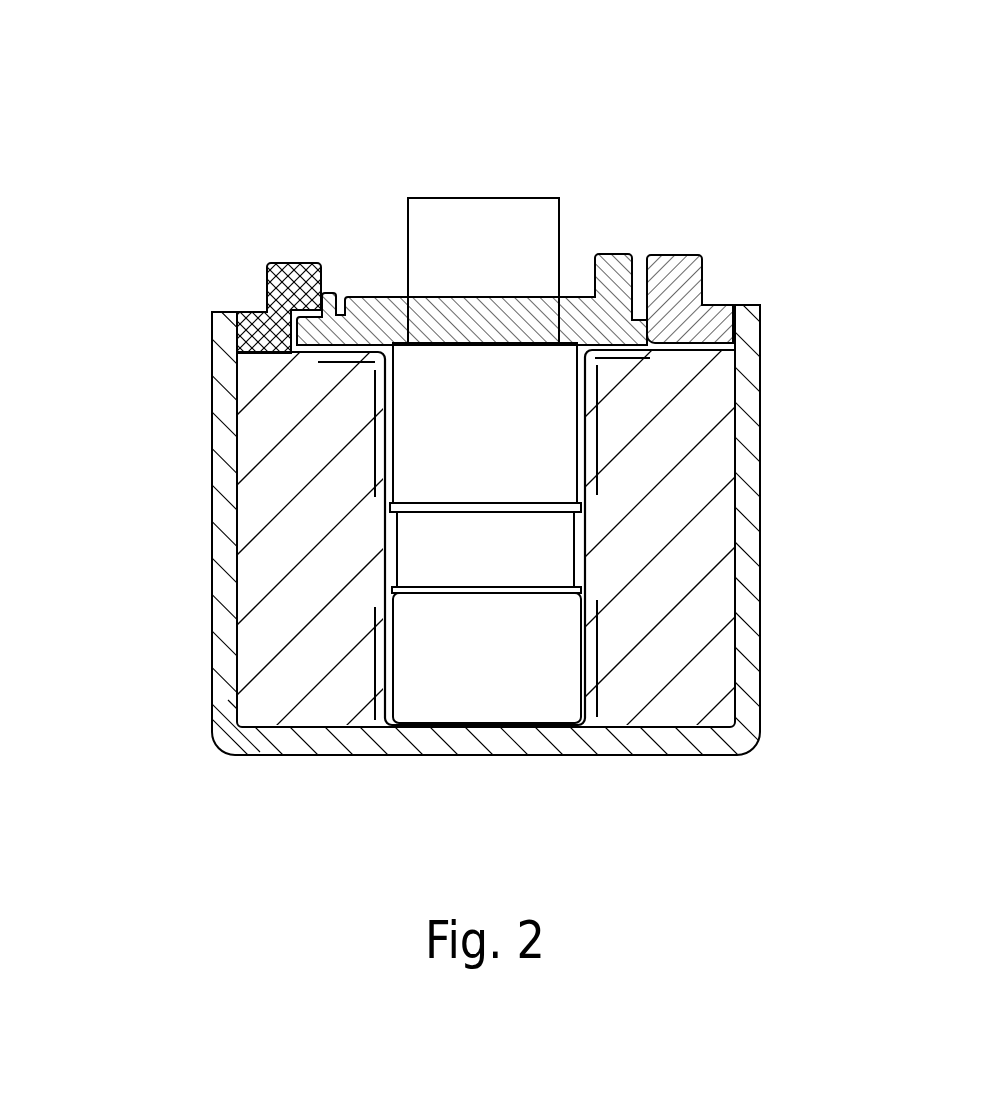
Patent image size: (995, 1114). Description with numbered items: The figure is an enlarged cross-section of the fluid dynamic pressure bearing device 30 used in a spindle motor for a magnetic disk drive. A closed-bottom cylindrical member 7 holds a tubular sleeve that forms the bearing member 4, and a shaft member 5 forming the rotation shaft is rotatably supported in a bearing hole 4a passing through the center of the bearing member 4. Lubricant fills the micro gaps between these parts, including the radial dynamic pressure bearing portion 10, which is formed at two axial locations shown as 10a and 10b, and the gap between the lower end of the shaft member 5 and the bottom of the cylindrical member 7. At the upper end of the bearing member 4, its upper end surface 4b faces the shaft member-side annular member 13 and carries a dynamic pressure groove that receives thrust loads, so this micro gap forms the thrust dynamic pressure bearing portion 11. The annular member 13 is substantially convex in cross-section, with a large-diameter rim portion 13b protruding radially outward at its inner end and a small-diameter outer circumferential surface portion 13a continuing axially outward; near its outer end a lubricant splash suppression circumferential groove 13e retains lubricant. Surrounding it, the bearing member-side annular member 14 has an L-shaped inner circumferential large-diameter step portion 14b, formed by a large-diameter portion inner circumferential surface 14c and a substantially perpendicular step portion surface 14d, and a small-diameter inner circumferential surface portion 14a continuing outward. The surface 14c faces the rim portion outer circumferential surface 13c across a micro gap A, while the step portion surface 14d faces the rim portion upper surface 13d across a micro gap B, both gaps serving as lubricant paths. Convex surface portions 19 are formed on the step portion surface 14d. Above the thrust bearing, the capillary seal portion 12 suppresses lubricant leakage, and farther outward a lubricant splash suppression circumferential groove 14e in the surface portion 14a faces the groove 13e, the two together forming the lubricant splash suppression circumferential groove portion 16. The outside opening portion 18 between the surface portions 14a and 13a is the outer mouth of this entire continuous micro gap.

The fluid dynamic pressure bearing device 30 is at (262, 105).
The closed-bottom cylindrical member 7 is at (762, 553).
The radial dynamic pressure bearing portion 10 is at (118, 475).
The radial dynamic pressure bearing portion 10a is at (367, 433).
The radial dynamic pressure bearing portion 10b is at (373, 660).
The thrust dynamic pressure bearing portion 11 is at (367, 363).
The bearing member 4 is at (697, 502).
The bearing hole 4a is at (405, 705).
The upper end surface of the bearing member 4b is at (393, 345).
The shaft member 5 is at (515, 697).
The capillary seal portion 12 is at (298, 263).
The shaft member-side annular member 13 is at (604, 244).
The small-diameter outer circumferential surface portion 13a is at (363, 257).
The large-diameter rim portion 13b is at (267, 267).
The rim portion outer circumferential surface 13c is at (248, 330).
The rim portion upper surface 13d is at (265, 300).
The lubricant splash suppression circumferential groove 13e is at (330, 283).
The lubricant splash suppression circumferential groove portion 16 is at (330, 280).
The outside opening portion 18 is at (635, 262).
The bearing member-side annular member 14 is at (732, 292).
The small-diameter inner circumferential surface portion 14a is at (690, 258).
The inner circumferential large-diameter step portion 14b is at (700, 287).
The large-diameter portion inner circumferential surface 14c is at (678, 332).
The step portion surface 14d is at (668, 345).
The convex surface portions 19 is at (661, 325).
The lubricant splash suppression circumferential groove 14e is at (638, 258).
The micro gap A is at (240, 357).
The micro gap B is at (262, 305).